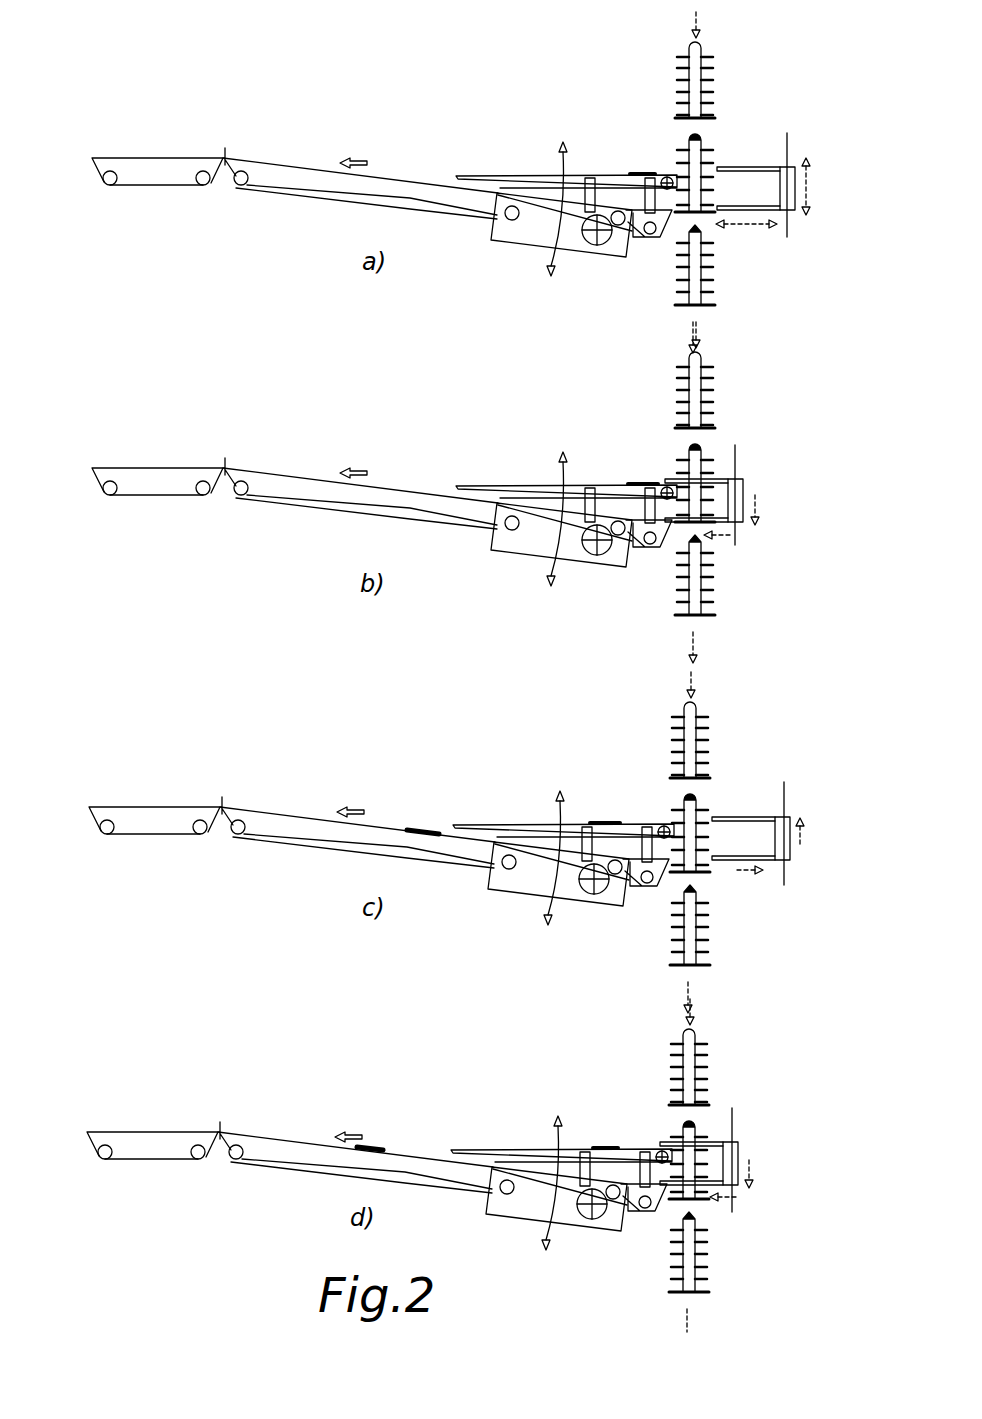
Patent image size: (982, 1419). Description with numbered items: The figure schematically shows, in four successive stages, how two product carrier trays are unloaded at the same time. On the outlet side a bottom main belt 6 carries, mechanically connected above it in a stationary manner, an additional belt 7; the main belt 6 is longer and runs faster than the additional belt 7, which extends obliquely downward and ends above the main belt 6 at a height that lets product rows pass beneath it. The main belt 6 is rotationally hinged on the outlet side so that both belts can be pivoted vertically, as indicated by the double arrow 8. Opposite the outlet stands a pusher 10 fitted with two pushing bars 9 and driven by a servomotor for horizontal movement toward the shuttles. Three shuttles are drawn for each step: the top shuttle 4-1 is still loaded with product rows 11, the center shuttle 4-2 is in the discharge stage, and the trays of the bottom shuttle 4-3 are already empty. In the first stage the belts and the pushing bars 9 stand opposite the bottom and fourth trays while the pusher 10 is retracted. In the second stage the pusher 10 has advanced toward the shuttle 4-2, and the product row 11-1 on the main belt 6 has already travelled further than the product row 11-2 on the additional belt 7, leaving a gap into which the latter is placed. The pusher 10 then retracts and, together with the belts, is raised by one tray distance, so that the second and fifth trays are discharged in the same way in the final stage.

The main belt 6 is at (318, 172).
The additional belt 7 is at (618, 176).
The double arrow 8 is at (562, 150).
The pushing bars 9 is at (730, 167).
The pusher 10 is at (797, 153).
The product rows 11 is at (707, 102).
The top shuttle 4-1 is at (713, 70).
The center shuttle 4-2 is at (680, 152).
The bottom shuttle 4-3 is at (712, 268).
The product row on the main belt 11-1 is at (578, 513).
The product row on the additional belt 11-2 is at (643, 483).